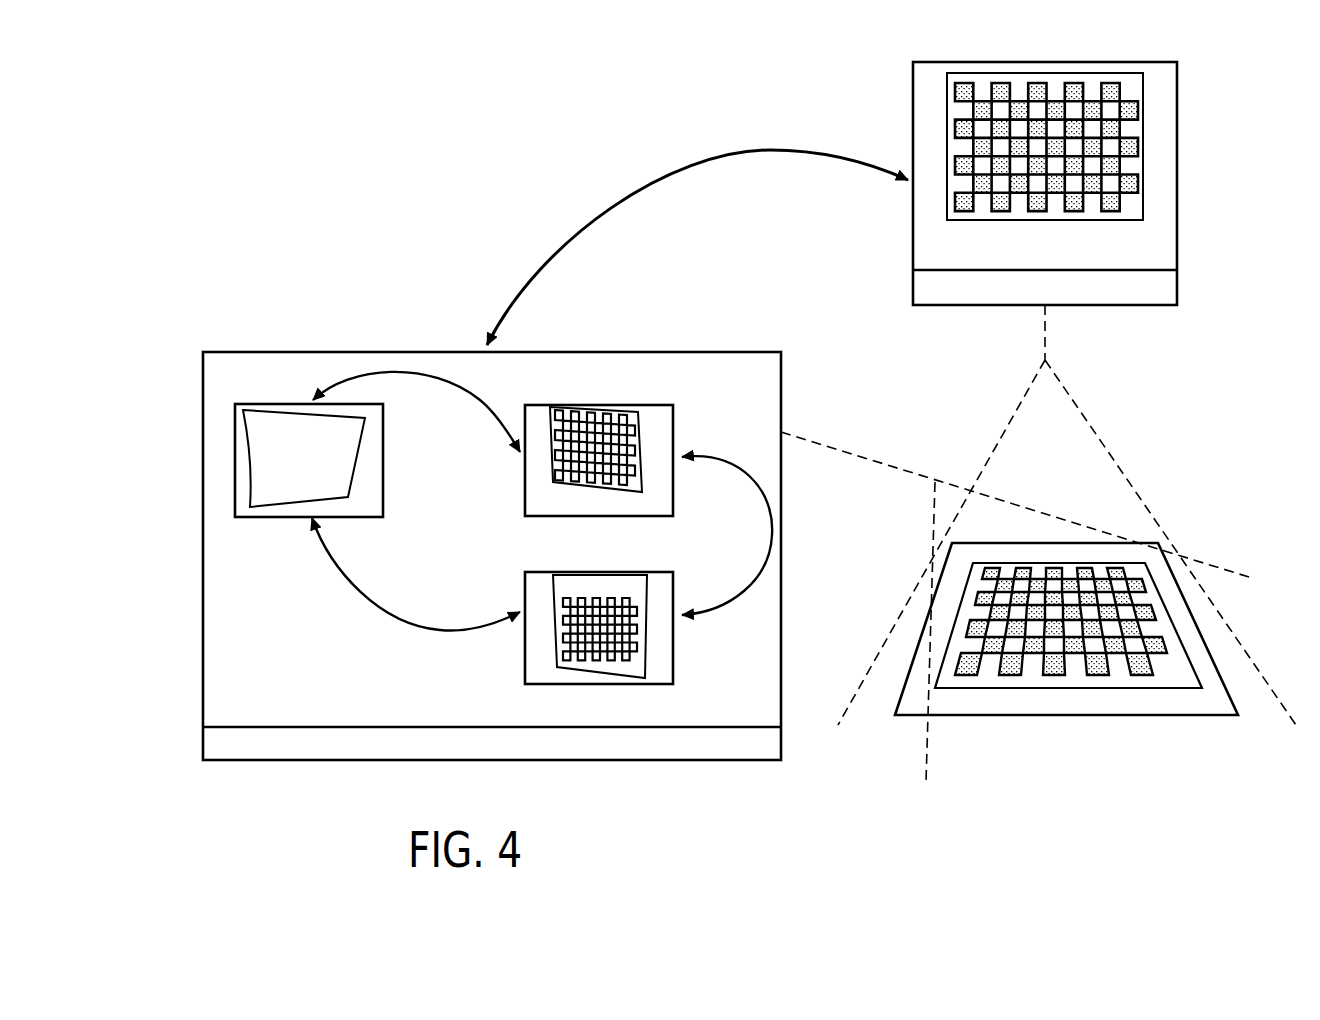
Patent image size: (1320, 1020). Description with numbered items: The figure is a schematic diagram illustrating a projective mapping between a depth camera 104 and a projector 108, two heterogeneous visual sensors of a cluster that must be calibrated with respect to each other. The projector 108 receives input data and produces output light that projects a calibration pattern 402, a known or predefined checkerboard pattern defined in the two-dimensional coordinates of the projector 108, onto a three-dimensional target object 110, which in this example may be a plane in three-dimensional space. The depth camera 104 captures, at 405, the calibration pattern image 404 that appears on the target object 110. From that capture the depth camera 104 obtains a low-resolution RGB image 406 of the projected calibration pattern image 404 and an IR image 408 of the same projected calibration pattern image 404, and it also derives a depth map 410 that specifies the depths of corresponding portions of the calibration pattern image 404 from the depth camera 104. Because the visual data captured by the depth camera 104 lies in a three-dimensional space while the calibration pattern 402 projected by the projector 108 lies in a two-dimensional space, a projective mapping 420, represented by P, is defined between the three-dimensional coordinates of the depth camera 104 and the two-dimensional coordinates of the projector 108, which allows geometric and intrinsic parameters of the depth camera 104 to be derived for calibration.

The depth camera 104 is at (203, 555).
The projector 108 is at (1177, 222).
The target object 110 is at (1067, 716).
The calibration pattern 402 is at (1143, 150).
The calibration pattern image 404 is at (995, 690).
The capture 405 is at (850, 452).
The low-resolution RGB image 406 is at (652, 405).
The IR image 408 is at (658, 684).
The depth map 410 is at (235, 460).
The projective mapping 420 is at (662, 172).